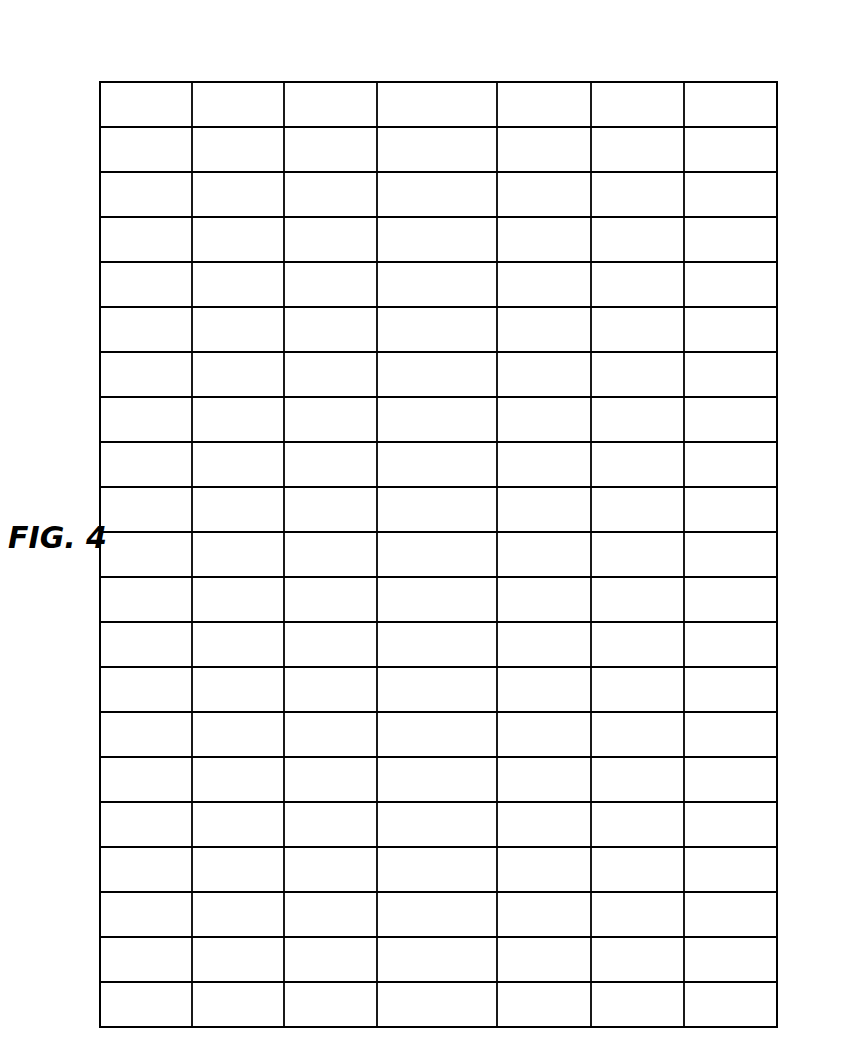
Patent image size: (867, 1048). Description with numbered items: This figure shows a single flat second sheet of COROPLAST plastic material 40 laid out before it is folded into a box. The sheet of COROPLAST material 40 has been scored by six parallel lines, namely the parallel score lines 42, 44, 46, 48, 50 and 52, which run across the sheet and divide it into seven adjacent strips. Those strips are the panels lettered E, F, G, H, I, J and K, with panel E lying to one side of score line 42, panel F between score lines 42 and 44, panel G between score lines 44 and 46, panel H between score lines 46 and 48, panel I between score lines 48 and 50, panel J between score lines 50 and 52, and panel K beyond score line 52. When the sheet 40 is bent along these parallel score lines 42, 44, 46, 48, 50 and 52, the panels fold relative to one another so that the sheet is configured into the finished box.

The second sheet of COROPLAST material 40 is at (478, 66).
The score line 42 is at (235, 530).
The score line 44 is at (327, 530).
The score line 46 is at (420, 530).
The score line 48 is at (539, 530).
The score line 50 is at (632, 530).
The score line 52 is at (726, 530).